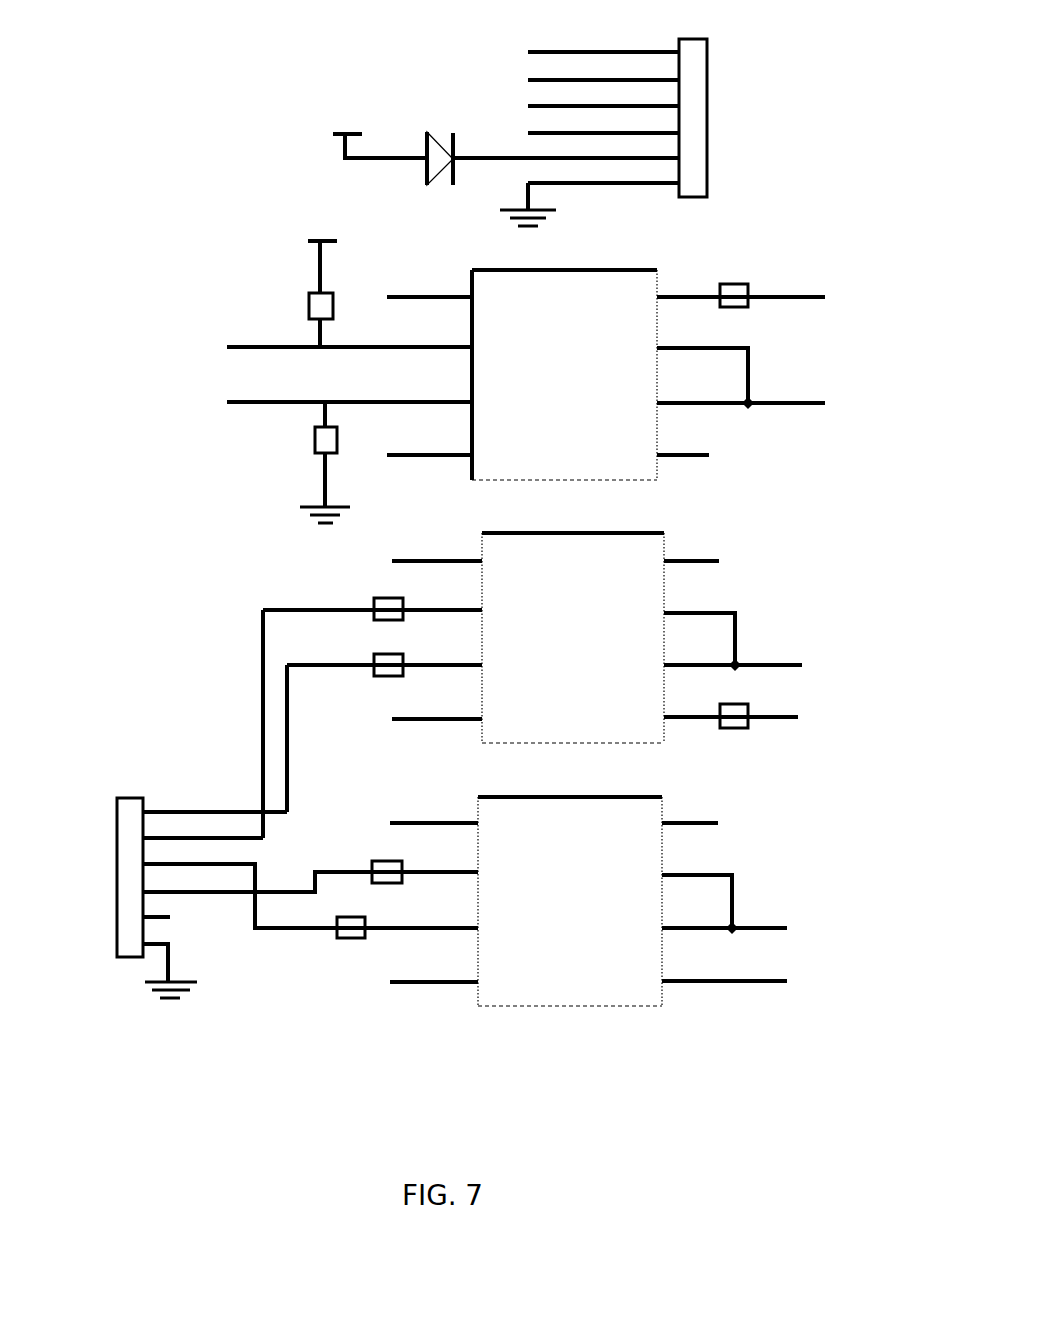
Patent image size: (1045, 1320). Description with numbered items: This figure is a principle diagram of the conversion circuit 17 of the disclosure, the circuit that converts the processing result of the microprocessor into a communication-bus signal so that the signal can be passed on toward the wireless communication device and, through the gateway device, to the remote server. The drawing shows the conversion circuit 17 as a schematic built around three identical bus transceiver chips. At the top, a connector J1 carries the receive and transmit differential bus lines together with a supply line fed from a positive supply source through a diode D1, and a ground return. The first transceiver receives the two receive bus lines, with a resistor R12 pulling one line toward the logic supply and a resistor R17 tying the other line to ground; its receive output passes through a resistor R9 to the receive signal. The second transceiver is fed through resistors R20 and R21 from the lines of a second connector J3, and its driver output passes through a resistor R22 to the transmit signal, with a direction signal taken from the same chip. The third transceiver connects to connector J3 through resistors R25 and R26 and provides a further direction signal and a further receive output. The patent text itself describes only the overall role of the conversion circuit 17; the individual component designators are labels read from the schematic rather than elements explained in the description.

The conversion circuit 17 is at (153, 502).
The connector J1 is at (693, 132).
The connector J3 is at (130, 868).
The diode D1 is at (440, 149).
The resistor R9 is at (734, 287).
The resistor R12 is at (336, 306).
The resistor R17 is at (340, 440).
The resistor R20 is at (389, 601).
The resistor R21 is at (389, 657).
The resistor R22 is at (734, 708).
The resistor R25 is at (387, 883).
The resistor R26 is at (351, 939).